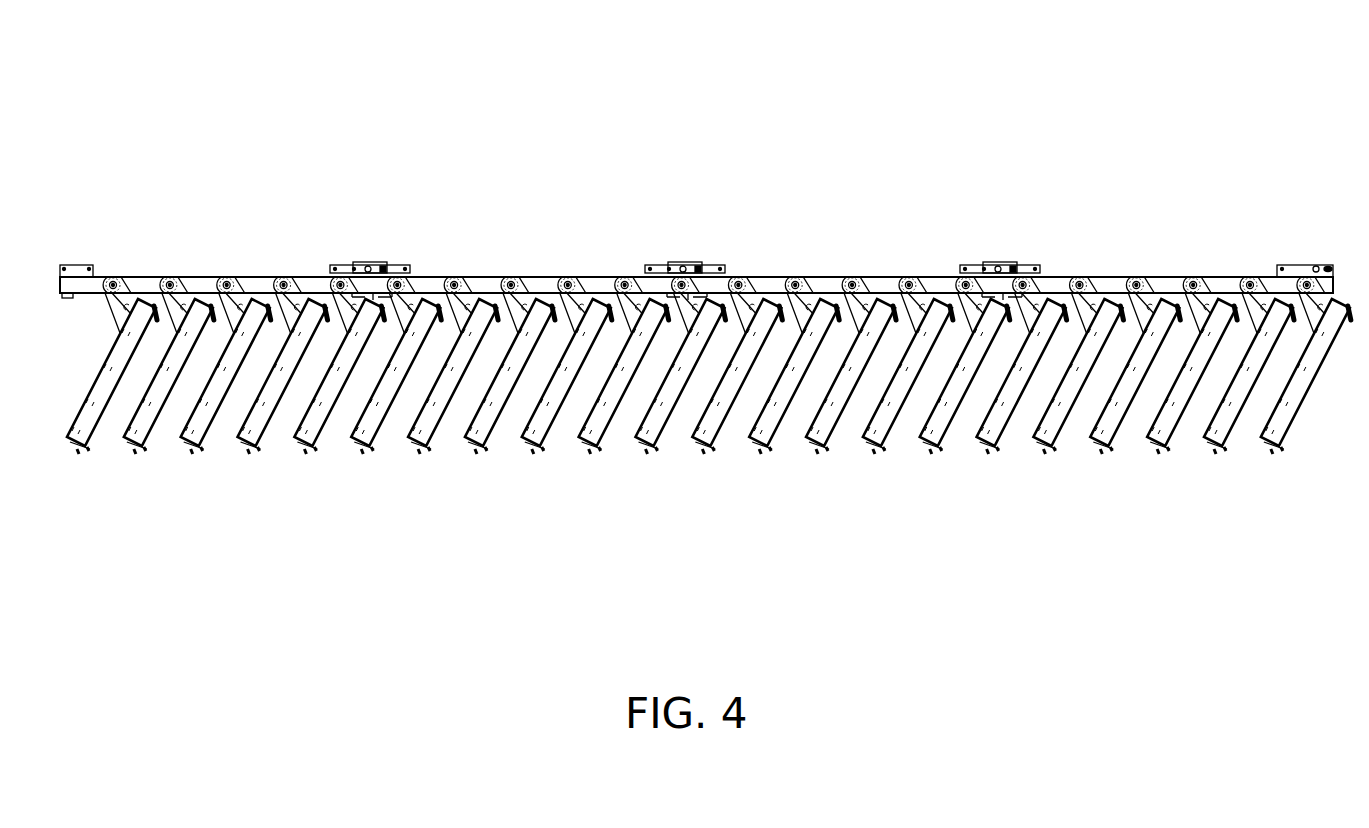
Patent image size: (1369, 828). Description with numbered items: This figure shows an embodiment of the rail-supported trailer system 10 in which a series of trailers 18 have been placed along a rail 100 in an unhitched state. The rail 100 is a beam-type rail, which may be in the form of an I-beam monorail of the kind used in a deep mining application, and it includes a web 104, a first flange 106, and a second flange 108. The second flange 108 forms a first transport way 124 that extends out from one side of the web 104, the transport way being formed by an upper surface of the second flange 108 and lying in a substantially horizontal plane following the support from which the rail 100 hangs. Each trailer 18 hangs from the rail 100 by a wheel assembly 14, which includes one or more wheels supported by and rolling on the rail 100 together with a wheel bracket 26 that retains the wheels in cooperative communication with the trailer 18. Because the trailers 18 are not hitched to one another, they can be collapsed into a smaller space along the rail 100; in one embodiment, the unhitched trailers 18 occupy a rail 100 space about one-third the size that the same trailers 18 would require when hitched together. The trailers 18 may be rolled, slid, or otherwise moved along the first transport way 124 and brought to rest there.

The rail-supported trailer system 10 is at (1183, 127).
The wheel assembly 14 is at (511, 295).
The trailer 18 is at (412, 446).
The wheel bracket 26 is at (527, 300).
The rail 100 is at (770, 288).
The web 104 is at (884, 287).
The first flange 106 is at (823, 277).
The second flange 108 is at (937, 293).
The first transport way 124 is at (604, 293).